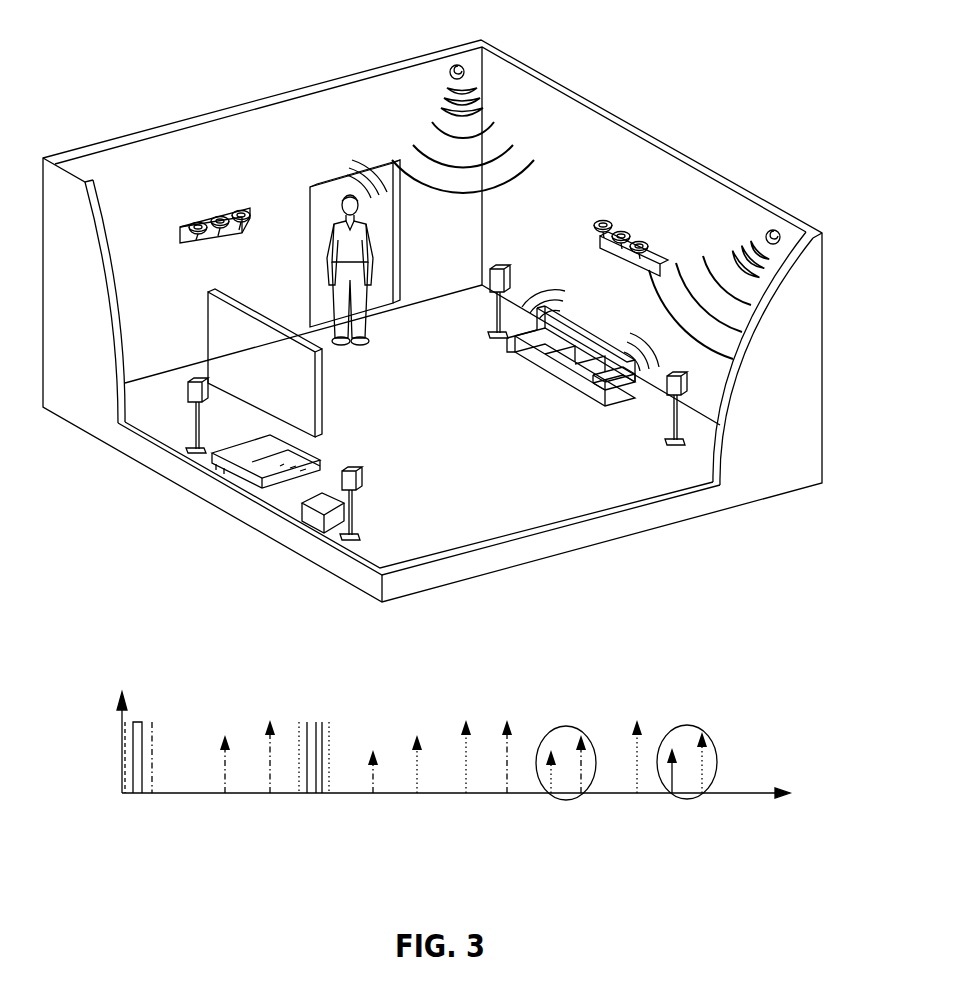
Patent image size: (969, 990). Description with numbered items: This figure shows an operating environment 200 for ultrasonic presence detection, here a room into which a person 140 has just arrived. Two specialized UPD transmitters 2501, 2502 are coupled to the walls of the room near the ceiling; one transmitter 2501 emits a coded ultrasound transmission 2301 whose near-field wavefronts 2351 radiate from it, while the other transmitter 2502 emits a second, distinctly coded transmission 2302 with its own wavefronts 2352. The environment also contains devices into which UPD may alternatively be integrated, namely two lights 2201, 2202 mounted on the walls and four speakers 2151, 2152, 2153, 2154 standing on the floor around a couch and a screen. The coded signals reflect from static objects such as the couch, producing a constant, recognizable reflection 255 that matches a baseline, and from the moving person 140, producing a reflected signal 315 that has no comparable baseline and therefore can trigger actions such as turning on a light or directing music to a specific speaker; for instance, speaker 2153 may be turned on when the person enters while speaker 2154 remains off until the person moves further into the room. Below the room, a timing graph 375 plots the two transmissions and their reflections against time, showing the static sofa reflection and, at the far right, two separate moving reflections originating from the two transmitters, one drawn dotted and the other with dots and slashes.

The environment 200 is at (603, 45).
The transmitter 2501 is at (398, 38).
The transmitted signal waves 2351 is at (415, 100).
The reflected signal 315 is at (380, 172).
The transmitted signal 2301 is at (496, 158).
The light 2201 is at (237, 177).
The light 2202 is at (628, 240).
The transmitter 2502 is at (783, 167).
The transmitted signal waves 2352 is at (757, 265).
The transmitted signal 2302 is at (607, 304).
The reflected signal 255 is at (552, 293).
The speaker 2151 is at (178, 370).
The speaker 2152 is at (360, 477).
The speaker 2153 is at (452, 347).
The speaker 2154 is at (630, 459).
The person 140 is at (368, 367).
The timing diagram 375 is at (441, 822).